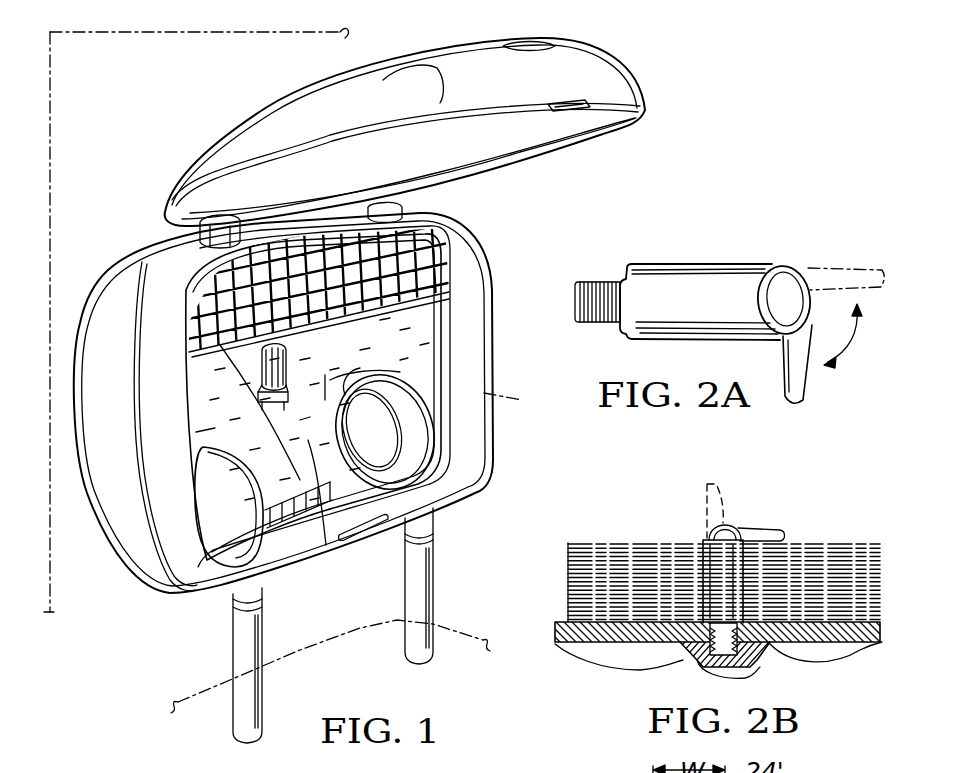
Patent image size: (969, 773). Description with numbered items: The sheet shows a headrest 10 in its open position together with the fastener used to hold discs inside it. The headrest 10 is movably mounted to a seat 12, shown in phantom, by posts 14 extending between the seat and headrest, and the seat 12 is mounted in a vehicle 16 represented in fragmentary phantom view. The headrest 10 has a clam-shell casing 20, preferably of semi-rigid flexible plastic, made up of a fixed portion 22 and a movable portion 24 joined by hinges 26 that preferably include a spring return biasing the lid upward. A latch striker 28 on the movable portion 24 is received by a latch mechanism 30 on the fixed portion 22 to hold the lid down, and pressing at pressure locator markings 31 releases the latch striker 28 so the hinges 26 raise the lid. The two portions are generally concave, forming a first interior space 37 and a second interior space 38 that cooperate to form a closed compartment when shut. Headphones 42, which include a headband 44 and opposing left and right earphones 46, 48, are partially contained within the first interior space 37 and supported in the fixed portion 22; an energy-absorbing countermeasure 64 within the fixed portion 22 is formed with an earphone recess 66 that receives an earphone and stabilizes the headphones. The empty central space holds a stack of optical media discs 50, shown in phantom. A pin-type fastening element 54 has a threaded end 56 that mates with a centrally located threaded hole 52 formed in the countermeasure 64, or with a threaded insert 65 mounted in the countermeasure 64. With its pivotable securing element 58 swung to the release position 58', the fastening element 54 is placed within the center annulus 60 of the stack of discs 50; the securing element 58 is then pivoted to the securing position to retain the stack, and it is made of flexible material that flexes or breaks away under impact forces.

In FIG. 1, the headrest 10 is at (508, 346).
In FIG. 1, the seat 12 is at (212, 692).
In FIG. 1, the posts 14 is at (440, 542).
In FIG. 1, the vehicle 16 is at (197, 32).
In FIG. 1, the casing 20 is at (130, 252).
In FIG. 1, the fixed portion 22 is at (112, 277).
In FIG. 1, the movable portion 24 is at (233, 130).
In FIG. 1, the hinges 26 is at (162, 240).
In FIG. 1, the latch striker 28 is at (572, 106).
In FIG. 1, the latch mechanism 30 is at (350, 543).
In FIG. 1, the pressure locator markings 31 is at (515, 45).
In FIG. 1, the first interior space 37 is at (368, 312).
In FIG. 1, the second interior space 38 is at (520, 140).
In FIG. 1, the headphones 42 is at (453, 340).
In FIG. 1, the headband 44 is at (434, 253).
In FIG. 1, the left earphone 46 is at (202, 503).
In FIG. 1, the right earphone 48 is at (423, 432).
In FIG. 1, the stack of optical media discs 50 is at (207, 427).
In FIG. 2B, the stack of optical media discs 50 is at (610, 545).
In FIG. 1, the threaded hole 52 is at (207, 351).
In FIG. 2B, the threaded hole 52 is at (720, 655).
In FIG. 2A, the pin-type fastening element 54 is at (690, 264).
In FIG. 2B, the pin-type fastening element 54 is at (703, 570).
In FIG. 2A, the threaded end 56 is at (602, 278).
In FIG. 2A, the pivotable securing element 58 is at (824, 369).
In FIG. 2B, the pivotable securing element 58 is at (766, 501).
In FIG. 2A, the release position of securing element 58' is at (836, 289).
In FIG. 2B, the release position of securing element 58' is at (736, 490).
In FIG. 1, the center annulus 60 is at (188, 392).
In FIG. 2B, the center annulus 60 is at (712, 532).
In FIG. 1, the countermeasure 64 is at (375, 338).
In FIG. 2B, the countermeasure 64 is at (565, 622).
In FIG. 2B, the threaded insert 65 is at (775, 658).
In FIG. 1, the earphone recess 66 is at (315, 445).